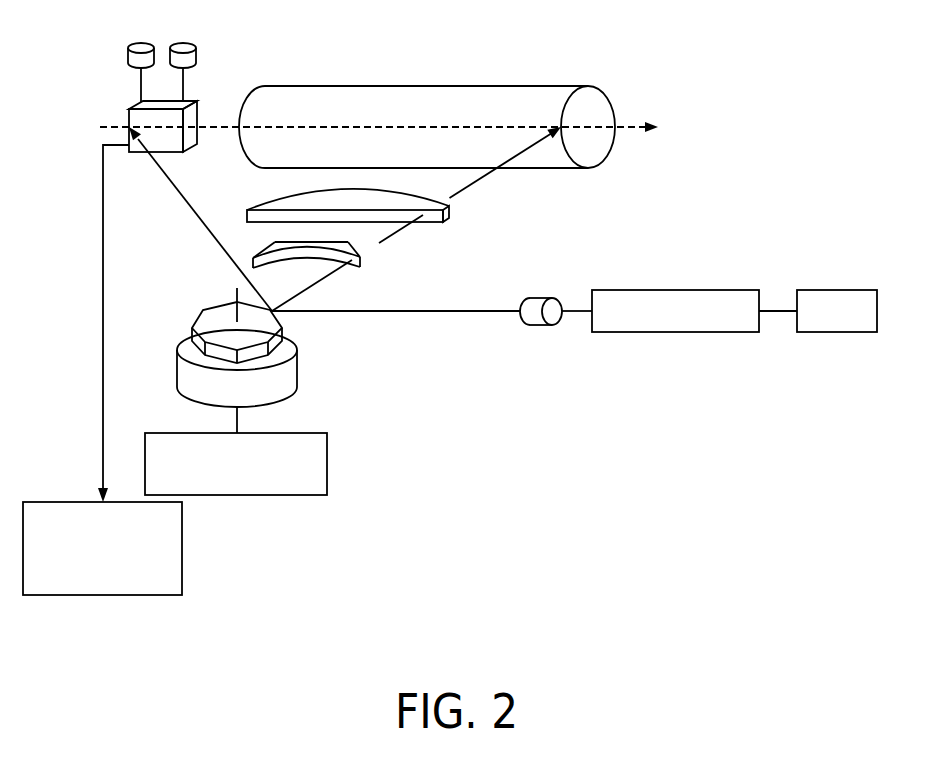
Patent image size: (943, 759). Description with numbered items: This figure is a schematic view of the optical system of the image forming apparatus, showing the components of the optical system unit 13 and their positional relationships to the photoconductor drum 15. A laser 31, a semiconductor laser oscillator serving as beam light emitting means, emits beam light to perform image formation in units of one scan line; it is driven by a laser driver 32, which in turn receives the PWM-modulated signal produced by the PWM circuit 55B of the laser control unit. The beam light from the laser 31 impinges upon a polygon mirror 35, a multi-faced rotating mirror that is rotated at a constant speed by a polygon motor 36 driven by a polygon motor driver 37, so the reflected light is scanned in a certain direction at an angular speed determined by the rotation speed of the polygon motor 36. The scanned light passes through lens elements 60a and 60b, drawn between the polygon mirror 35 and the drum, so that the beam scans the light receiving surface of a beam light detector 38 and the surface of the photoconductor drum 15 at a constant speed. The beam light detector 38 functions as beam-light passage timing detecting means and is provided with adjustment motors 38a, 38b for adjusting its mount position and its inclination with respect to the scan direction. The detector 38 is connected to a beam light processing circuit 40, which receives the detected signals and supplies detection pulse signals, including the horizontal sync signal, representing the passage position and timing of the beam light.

The optical system unit 13 is at (599, 488).
The photoconductor drum 15 is at (421, 85).
The laser 31 is at (539, 297).
The laser driver 32 is at (676, 290).
The polygon mirror 35 is at (213, 312).
The polygon motor 36 is at (297, 360).
The polygon motor driver 37 is at (327, 463).
The beam light detector 38 is at (137, 108).
The adjustment motor 38a is at (128, 53).
The adjustment motor 38b is at (198, 53).
The beam light processing circuit 40 is at (182, 548).
The PWM circuit 55B is at (838, 290).
The f-theta lens 60a is at (450, 212).
The cylindrical lens 60b is at (362, 262).